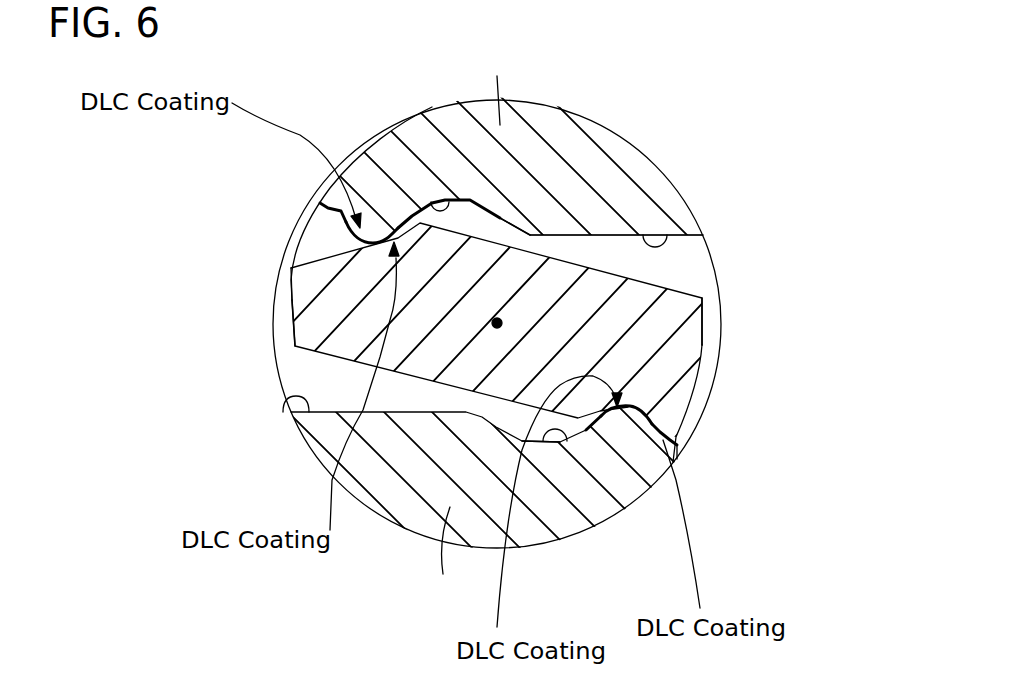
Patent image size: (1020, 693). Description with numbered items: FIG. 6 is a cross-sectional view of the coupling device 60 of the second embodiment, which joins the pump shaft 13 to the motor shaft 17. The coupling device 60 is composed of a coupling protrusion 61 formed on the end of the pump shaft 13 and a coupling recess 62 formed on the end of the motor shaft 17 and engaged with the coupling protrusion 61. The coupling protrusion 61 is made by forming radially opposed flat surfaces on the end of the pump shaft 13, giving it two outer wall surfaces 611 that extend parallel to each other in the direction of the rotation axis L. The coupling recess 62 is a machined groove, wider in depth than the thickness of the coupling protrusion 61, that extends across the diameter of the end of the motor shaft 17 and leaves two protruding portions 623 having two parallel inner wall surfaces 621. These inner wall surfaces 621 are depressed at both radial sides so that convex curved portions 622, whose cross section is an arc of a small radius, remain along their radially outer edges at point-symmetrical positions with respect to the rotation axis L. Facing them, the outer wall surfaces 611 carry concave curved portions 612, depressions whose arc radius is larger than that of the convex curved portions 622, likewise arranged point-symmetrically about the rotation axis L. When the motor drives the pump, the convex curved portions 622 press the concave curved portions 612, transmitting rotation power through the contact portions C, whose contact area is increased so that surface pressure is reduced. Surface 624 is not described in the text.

The coupling device 60 is at (358, 98).
The motor shaft 17 is at (624, 134).
The pump shaft 13 is at (282, 270).
The coupling protrusion 61 is at (330, 244).
The coupling recess 62 is at (690, 261).
The outer wall surfaces 611 is at (703, 297).
The concave curved portions 612 is at (345, 222).
The inner wall surfaces 621 is at (663, 240).
The convex curved portions 622 is at (377, 222).
The protruding portions 623 is at (510, 324).
The sealing surface 624 is at (397, 238).
The contact portions C is at (378, 245).
The rotation axis L is at (502, 323).